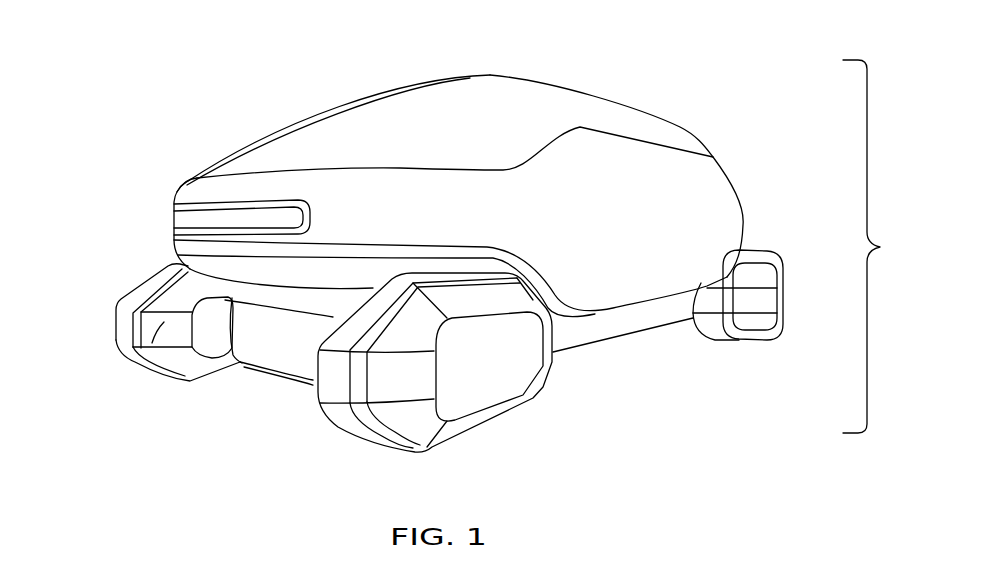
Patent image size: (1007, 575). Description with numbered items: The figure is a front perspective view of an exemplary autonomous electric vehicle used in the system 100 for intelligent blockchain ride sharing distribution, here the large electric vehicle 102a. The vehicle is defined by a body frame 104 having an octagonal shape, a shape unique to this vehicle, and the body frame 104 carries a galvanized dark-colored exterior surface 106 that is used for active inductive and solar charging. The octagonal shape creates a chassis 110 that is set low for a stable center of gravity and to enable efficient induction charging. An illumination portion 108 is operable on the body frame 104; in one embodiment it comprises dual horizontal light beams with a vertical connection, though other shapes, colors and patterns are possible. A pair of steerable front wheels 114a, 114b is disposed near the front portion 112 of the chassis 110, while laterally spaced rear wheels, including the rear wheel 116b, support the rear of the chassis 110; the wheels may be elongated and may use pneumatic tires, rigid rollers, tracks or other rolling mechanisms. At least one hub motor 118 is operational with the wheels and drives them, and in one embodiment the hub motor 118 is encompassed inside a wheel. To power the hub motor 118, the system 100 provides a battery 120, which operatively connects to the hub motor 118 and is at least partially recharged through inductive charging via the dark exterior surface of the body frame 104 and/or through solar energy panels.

The system 100 is at (225, 92).
The electric vehicle 102a is at (880, 247).
The body frame 104 is at (480, 88).
The exterior surface 106 is at (595, 222).
The illumination portion 108 is at (195, 202).
The chassis 110 is at (297, 358).
The front portion 112 is at (160, 232).
The steerable front wheel 114a is at (130, 351).
The steerable front wheel 114b is at (352, 420).
The rear wheel 116b is at (742, 308).
The hub motor 118 is at (500, 368).
The battery 120 is at (572, 322).